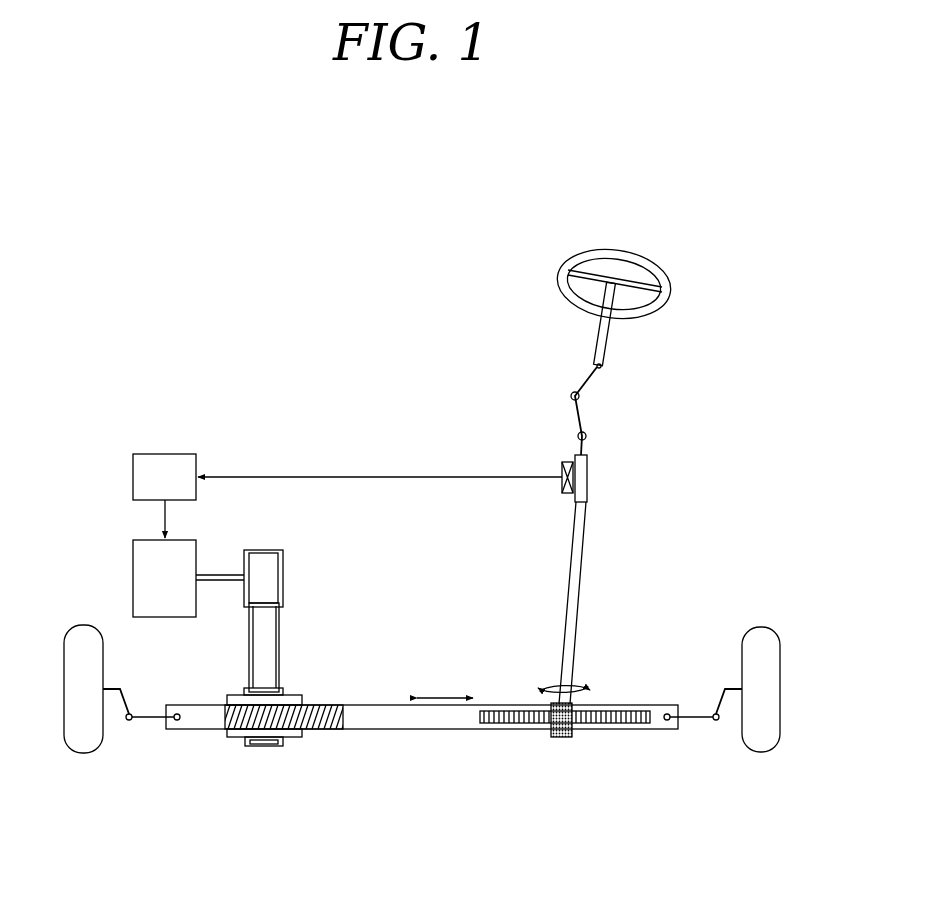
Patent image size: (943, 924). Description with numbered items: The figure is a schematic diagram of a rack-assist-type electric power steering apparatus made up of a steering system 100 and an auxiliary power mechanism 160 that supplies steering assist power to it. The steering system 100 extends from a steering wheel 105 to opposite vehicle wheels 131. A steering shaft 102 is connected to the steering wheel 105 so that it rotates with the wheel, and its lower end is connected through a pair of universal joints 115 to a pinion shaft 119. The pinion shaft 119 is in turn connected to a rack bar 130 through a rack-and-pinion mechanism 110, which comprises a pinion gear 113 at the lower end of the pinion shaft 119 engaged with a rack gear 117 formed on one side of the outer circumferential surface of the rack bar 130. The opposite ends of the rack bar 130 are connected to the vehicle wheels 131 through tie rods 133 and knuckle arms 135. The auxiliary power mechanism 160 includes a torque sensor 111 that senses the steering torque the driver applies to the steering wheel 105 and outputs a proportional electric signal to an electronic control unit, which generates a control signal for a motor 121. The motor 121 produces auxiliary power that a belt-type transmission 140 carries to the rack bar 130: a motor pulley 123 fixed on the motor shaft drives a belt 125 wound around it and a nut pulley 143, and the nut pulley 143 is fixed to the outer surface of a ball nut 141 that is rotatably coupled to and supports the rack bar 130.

The steering system 100 is at (486, 403).
The steering shaft 102 is at (613, 342).
The steering wheel 105 is at (578, 258).
The rack-and-pinion mechanism 110 is at (650, 840).
The torque sensor 111 is at (562, 464).
The pinion gear 113 is at (558, 737).
The universal joints 115 is at (579, 396).
The rack gear 117 is at (615, 722).
The pinion shaft 119 is at (571, 578).
The motor 121 is at (143, 594).
The motor pulley 123 is at (272, 580).
The belt 125 is at (272, 638).
The rack bar 130 is at (362, 710).
The vehicle wheels 131 is at (760, 642).
The tie rods 133 is at (700, 715).
The knuckle arms 135 is at (732, 688).
The belt-type transmission 140 is at (323, 756).
The ball nut 141 is at (238, 738).
The nut pulley 143 is at (231, 701).
The auxiliary power mechanism 160 is at (250, 450).